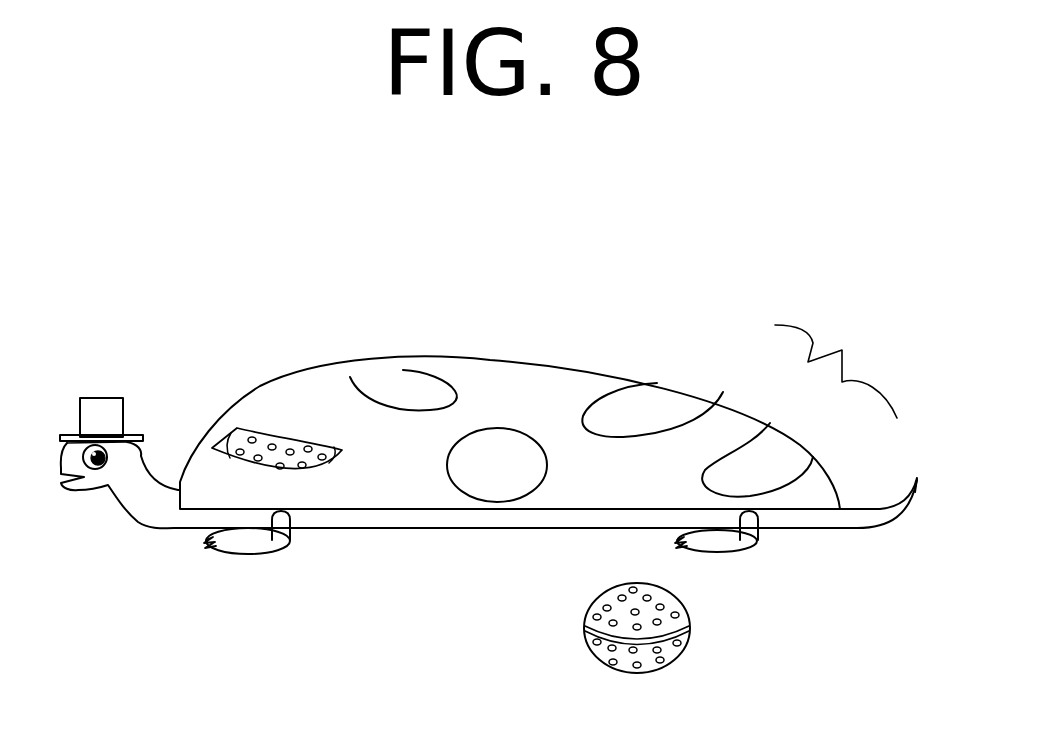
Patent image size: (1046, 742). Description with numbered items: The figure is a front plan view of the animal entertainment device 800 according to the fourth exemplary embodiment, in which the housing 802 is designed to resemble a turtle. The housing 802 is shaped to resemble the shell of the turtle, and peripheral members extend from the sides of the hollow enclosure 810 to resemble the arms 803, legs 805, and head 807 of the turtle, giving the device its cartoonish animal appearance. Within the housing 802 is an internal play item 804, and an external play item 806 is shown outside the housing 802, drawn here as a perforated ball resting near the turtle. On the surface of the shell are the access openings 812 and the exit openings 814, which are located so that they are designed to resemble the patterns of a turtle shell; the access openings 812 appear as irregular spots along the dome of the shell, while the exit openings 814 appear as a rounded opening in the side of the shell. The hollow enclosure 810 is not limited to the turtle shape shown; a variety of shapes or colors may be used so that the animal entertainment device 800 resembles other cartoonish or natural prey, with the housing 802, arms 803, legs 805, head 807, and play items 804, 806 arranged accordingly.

The animal entertainment device 800 is at (697, 283).
The housing 802 is at (836, 366).
The arms 803 is at (250, 545).
The internal play item 804 is at (290, 460).
The legs 805 is at (708, 545).
The external play item 806 is at (623, 632).
The head 807 is at (108, 485).
The hollow enclosure 810 is at (330, 380).
The access openings 812 is at (404, 397).
The exit openings 814 is at (486, 472).